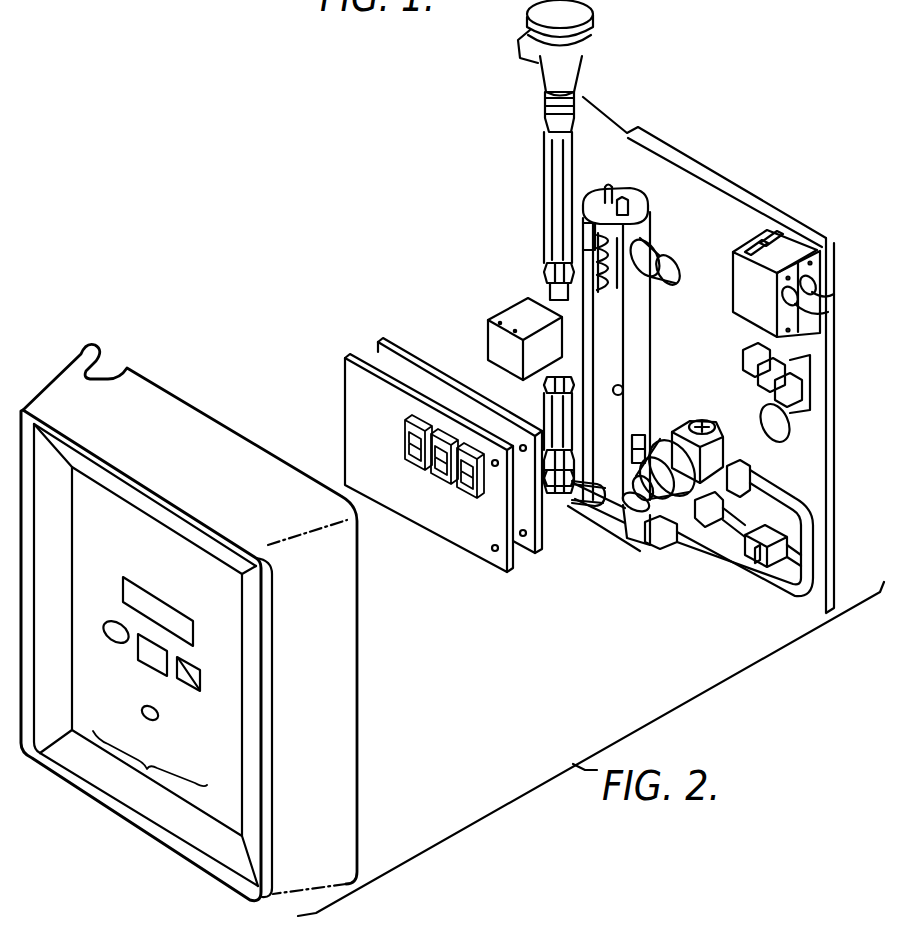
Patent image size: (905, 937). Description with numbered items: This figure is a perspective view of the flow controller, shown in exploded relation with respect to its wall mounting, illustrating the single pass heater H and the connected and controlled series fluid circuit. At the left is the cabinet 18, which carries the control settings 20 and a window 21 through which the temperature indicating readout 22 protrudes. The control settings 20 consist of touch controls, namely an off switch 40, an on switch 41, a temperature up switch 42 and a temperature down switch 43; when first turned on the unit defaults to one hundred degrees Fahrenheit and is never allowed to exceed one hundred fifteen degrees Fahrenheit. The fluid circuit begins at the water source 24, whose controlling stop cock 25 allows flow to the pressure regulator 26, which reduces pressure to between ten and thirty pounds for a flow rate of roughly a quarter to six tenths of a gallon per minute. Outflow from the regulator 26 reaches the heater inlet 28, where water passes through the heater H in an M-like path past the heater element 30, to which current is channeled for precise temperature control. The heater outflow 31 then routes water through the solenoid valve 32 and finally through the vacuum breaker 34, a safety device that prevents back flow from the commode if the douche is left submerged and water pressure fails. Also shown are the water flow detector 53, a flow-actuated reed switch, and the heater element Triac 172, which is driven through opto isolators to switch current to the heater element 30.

The cabinet 18 is at (718, 172).
The control settings 20 is at (165, 676).
The window 21 is at (140, 597).
The temperature indicating readout 22 is at (428, 545).
The water source 24 is at (782, 562).
The stop cock 25 is at (755, 565).
The pressure regulator 26 is at (755, 463).
The heater inlet 28 is at (634, 548).
The heater element 30 is at (592, 267).
The heater outflow 31 is at (567, 500).
The solenoid valve 32 is at (490, 341).
The vacuum breaker 34 is at (593, 7).
The off switch 40 is at (114, 622).
The on switch 41 is at (144, 660).
The temperature up switch 42 is at (180, 690).
The temperature down switch 43 is at (201, 684).
The water flow detector 53 is at (622, 545).
The heater element Triac 172 is at (658, 245).
The heater H is at (658, 332).